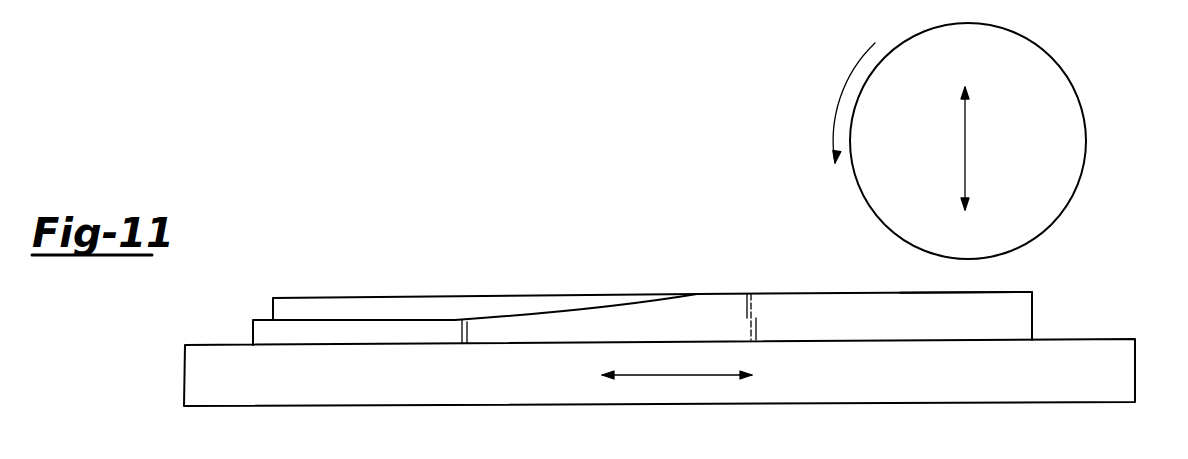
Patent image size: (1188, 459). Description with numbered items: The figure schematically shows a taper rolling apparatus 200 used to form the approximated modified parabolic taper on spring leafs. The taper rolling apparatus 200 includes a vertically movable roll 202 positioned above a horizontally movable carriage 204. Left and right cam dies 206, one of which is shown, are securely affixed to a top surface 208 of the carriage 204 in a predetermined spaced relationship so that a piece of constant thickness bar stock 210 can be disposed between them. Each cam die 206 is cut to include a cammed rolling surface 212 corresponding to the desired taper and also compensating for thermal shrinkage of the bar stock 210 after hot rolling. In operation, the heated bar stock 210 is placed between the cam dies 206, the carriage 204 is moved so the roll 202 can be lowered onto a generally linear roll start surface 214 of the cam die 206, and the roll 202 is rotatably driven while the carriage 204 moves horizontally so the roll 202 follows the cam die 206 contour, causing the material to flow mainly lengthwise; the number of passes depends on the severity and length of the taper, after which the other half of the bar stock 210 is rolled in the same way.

The taper rolling apparatus 200 is at (737, 193).
The roll 202 is at (1023, 70).
The carriage 204 is at (1065, 337).
The cam die 206 is at (780, 297).
The top surface 208 is at (210, 343).
The bar stock 210 is at (315, 303).
The cammed rolling surface 212 is at (560, 315).
The roll start surface 214 is at (960, 293).